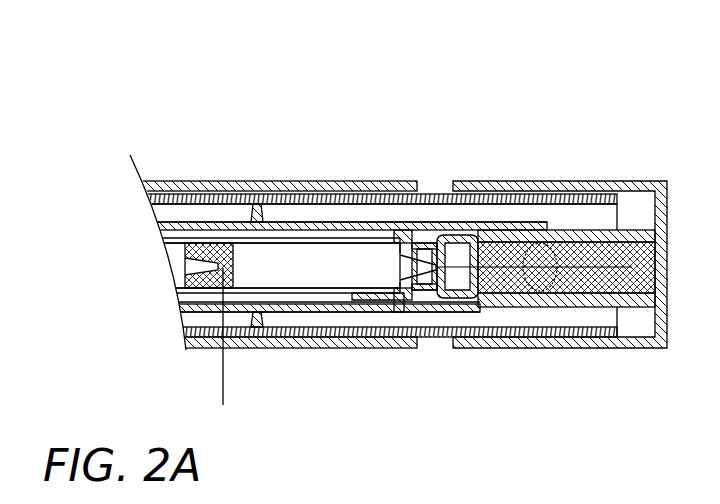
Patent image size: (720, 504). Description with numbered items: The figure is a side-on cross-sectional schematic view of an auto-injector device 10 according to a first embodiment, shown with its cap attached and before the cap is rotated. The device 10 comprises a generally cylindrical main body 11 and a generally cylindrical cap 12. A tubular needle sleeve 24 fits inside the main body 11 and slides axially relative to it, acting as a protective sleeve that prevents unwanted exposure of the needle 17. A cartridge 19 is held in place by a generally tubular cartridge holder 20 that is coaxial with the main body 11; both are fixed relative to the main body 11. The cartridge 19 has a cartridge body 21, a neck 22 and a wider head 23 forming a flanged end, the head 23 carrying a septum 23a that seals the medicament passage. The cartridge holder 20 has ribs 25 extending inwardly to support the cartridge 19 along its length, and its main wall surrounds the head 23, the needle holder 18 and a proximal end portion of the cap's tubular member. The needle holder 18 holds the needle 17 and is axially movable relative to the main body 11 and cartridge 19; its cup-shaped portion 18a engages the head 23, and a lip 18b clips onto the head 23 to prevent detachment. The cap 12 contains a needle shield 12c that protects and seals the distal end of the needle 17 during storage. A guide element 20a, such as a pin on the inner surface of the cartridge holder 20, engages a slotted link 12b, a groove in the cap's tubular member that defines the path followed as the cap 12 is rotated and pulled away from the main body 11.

The auto-injector device 10 is at (104, 94).
The main body 11 is at (387, 348).
The cap 12 is at (659, 342).
The slotted link 12b is at (546, 262).
The needle shield 12c is at (607, 290).
The needle 17 is at (481, 295).
The needle holder 18 is at (474, 293).
The cup-shaped portion 18a is at (445, 290).
The lip 18b is at (459, 243).
The cartridge 19 is at (313, 272).
The cartridge holder 20 is at (353, 228).
The guide element 20a is at (530, 236).
The cartridge body 21 is at (287, 279).
The neck 22 is at (402, 312).
The head 23 is at (424, 240).
The septum 23a is at (440, 273).
The needle sleeve 24 is at (171, 189).
The ribs 25 is at (259, 204).